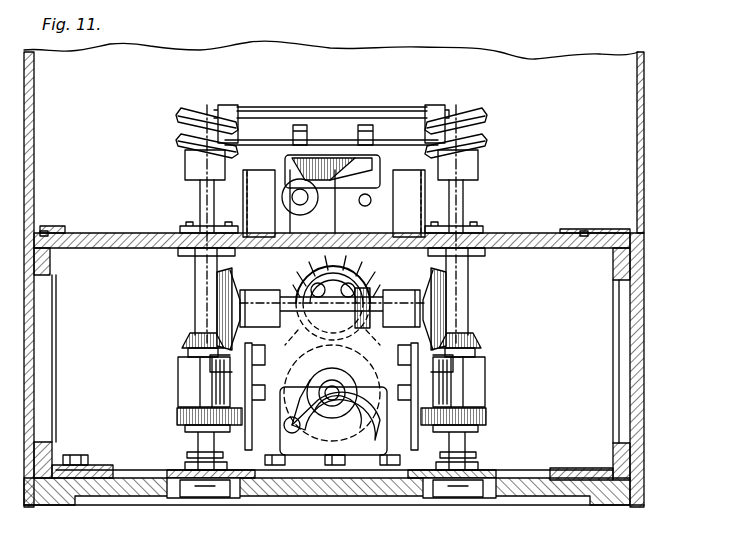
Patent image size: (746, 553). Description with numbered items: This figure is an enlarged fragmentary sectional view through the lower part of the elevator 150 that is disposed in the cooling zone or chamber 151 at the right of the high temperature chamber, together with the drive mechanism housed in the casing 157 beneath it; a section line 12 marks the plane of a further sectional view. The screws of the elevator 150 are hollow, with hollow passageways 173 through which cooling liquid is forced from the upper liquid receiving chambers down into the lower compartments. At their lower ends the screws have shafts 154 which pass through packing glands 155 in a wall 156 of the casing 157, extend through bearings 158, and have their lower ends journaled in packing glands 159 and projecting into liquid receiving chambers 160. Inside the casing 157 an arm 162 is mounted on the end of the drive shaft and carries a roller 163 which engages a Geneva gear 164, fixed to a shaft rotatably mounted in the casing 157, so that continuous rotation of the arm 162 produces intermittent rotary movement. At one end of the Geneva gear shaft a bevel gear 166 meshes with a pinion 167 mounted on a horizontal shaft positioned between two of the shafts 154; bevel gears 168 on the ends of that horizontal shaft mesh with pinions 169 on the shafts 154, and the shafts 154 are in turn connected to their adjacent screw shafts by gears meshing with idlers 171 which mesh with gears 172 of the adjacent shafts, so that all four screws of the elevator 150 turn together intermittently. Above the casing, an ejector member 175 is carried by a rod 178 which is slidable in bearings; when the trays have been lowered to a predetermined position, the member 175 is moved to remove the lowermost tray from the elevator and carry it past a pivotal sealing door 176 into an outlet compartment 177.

The section line 12— 12 is at (163, 105).
The elevator 150 is at (180, 136).
The cooling zone or chamber 151 is at (622, 144).
The shafts 154 is at (200, 284).
The packing glands 155 is at (182, 234).
The wall 156 is at (131, 242).
The casing 157 is at (620, 316).
The bearings 158 is at (178, 370).
The packing glands 159 is at (190, 463).
The liquid receiving chambers 160 is at (203, 492).
The arm 162 is at (300, 428).
The roller 163 is at (296, 432).
The Geneva gear 164 is at (355, 336).
The bevel gear 166 is at (303, 288).
The pinion 167 is at (370, 292).
The bevel gears 168 is at (220, 306).
The pinions 169 is at (185, 340).
The idlers 171 is at (240, 383).
The gears 172 is at (180, 416).
The hollow passageways 173 is at (207, 168).
The ejector member 175 is at (368, 158).
The pivotal sealing door 176 is at (338, 128).
The outlet compartment 177 is at (240, 128).
The rod 178 is at (298, 197).